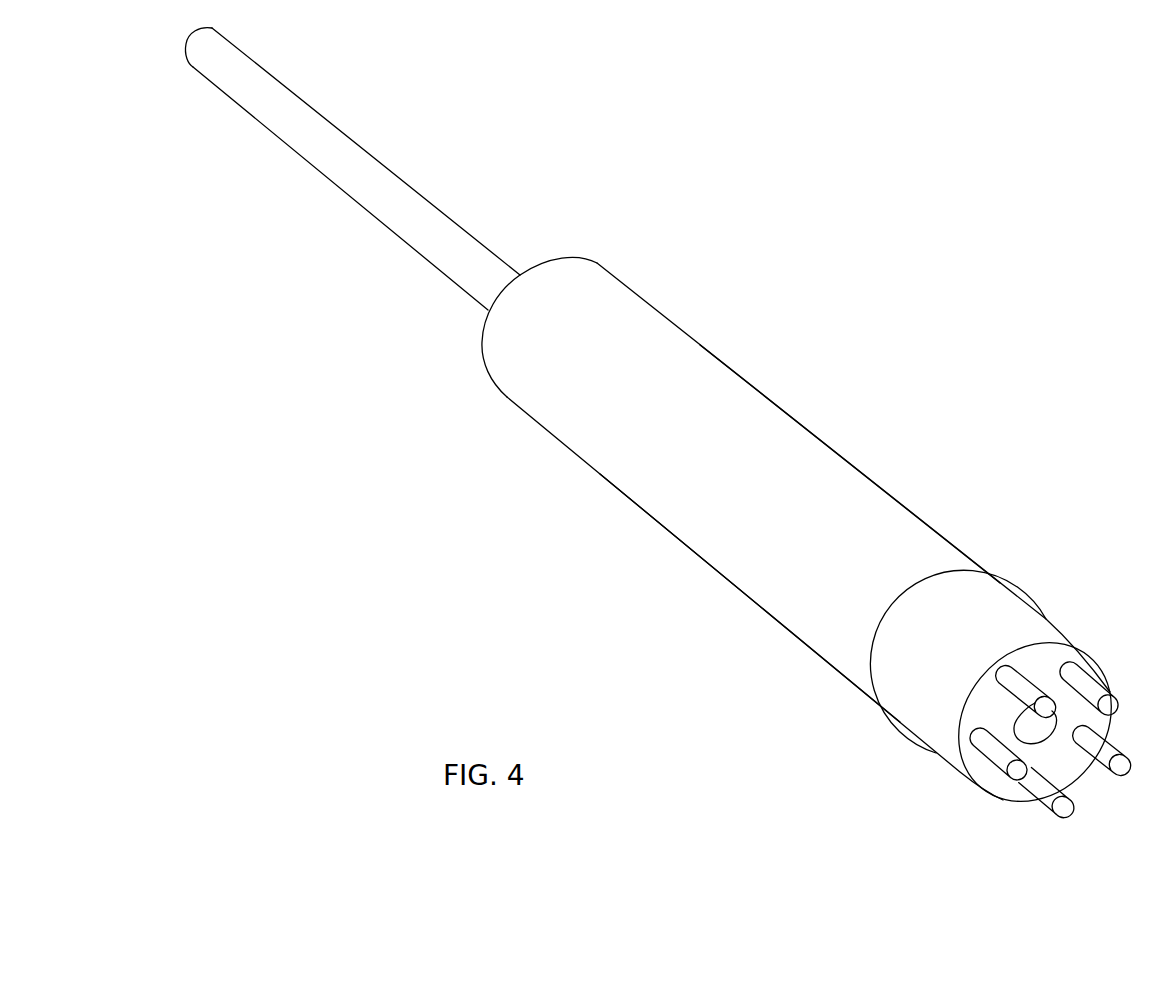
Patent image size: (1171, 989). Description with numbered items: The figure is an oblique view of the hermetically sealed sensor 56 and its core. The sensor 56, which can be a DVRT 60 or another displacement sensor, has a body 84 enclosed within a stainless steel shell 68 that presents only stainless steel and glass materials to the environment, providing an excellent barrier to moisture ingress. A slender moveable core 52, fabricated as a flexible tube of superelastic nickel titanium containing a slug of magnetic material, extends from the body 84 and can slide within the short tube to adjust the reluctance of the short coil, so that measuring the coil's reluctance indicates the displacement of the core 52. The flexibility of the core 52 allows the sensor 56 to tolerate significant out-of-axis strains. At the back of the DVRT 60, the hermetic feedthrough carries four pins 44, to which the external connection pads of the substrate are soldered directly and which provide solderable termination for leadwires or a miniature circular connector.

The hermetic feed through pins 44 is at (998, 753).
The moveable core 52 is at (415, 207).
The sensor 56 is at (695, 312).
The DVRT 60 is at (777, 383).
The stainless steel shell 68 is at (825, 618).
The body 84 is at (823, 462).